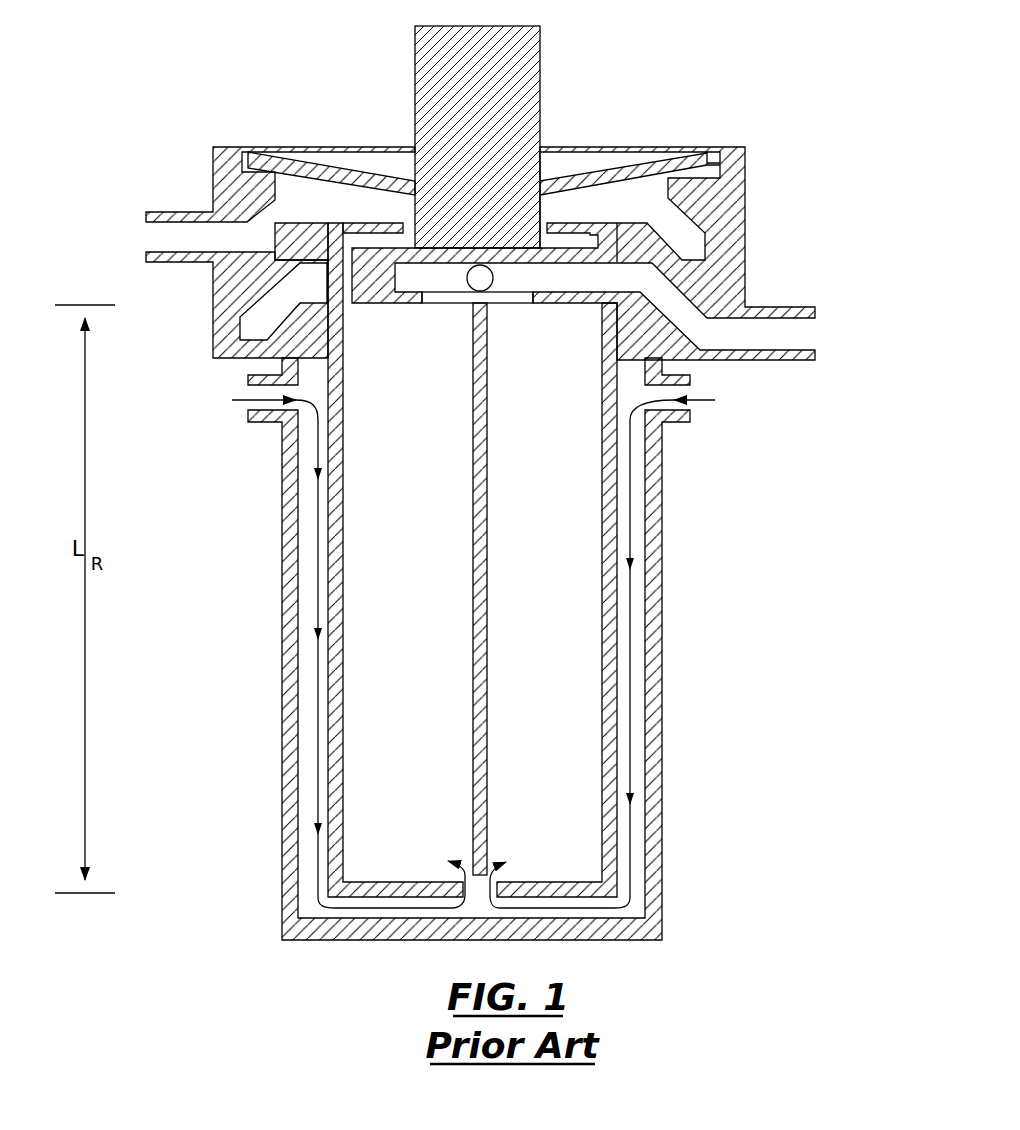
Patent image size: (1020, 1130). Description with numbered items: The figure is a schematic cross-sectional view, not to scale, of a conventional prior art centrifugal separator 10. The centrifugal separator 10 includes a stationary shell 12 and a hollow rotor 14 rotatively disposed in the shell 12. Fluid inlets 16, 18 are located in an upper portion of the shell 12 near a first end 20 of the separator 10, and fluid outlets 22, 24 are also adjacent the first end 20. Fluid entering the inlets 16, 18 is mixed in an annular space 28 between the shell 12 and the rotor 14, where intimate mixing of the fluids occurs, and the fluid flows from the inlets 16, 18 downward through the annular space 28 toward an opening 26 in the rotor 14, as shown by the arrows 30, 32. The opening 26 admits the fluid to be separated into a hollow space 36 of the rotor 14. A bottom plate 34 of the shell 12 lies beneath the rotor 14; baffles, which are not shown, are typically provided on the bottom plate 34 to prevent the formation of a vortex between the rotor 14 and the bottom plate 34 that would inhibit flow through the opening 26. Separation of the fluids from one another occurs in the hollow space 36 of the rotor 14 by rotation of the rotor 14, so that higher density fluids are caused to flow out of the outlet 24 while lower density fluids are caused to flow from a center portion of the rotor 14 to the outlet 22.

The centrifugal separator 10 is at (772, 166).
The stationary shell 12 is at (290, 732).
The hollow rotor 14 is at (335, 785).
The fluid inlet 16 is at (688, 419).
The fluid inlet 18 is at (268, 421).
The first end 20 is at (748, 216).
The fluid outlet 22 is at (757, 332).
The fluid outlet 24 is at (205, 233).
The opening 26 is at (514, 862).
The annular space 28 is at (305, 676).
The arrow 30 is at (632, 522).
The arrow 32 is at (322, 563).
The bottom plate 34 is at (334, 945).
The hollow space 36 is at (389, 688).